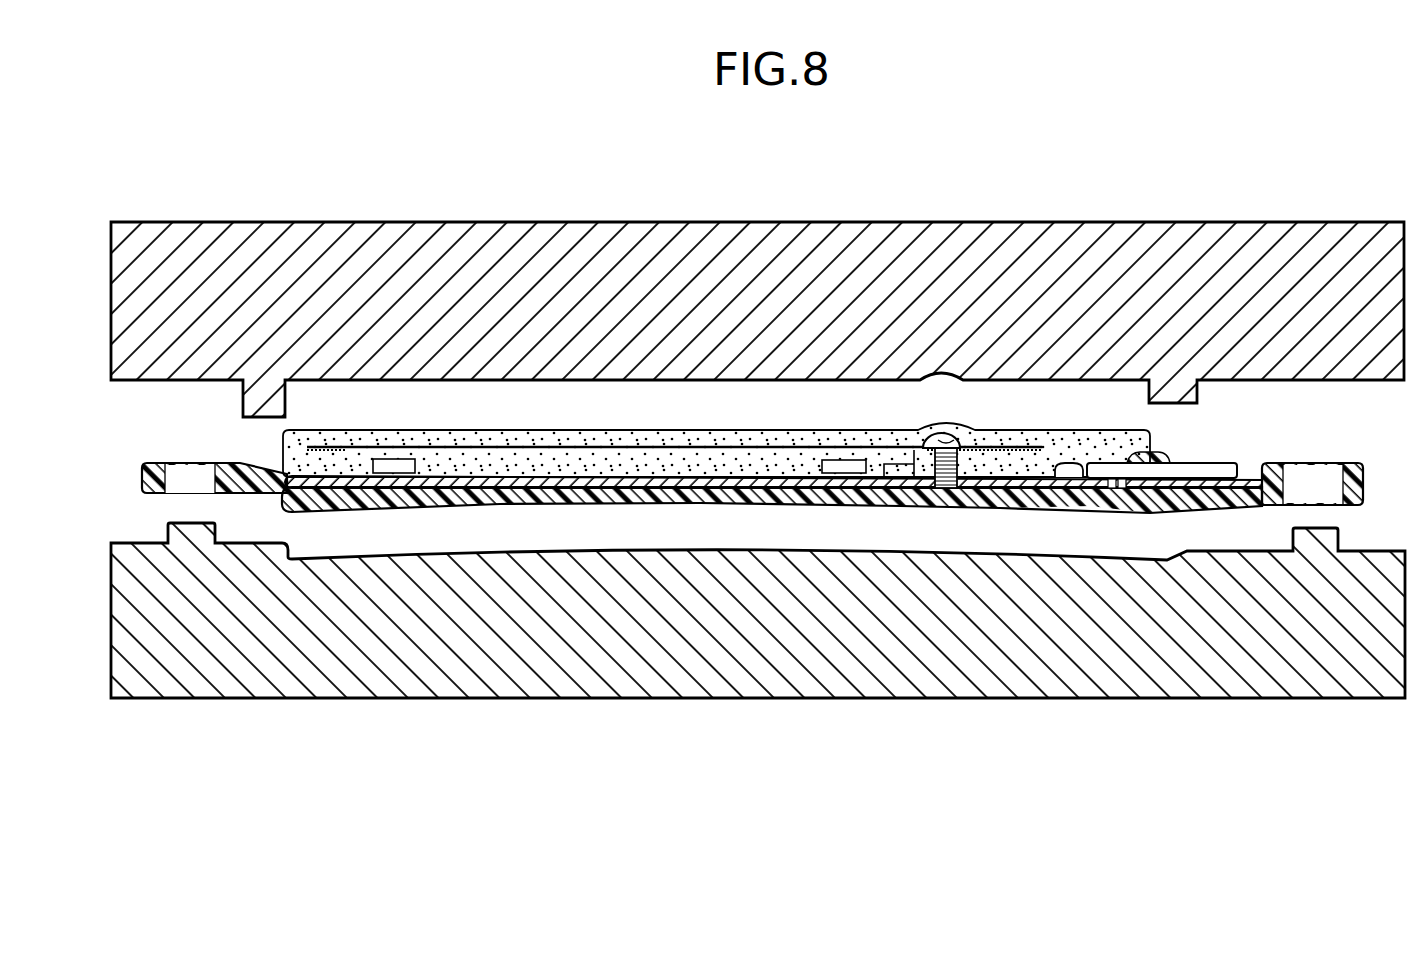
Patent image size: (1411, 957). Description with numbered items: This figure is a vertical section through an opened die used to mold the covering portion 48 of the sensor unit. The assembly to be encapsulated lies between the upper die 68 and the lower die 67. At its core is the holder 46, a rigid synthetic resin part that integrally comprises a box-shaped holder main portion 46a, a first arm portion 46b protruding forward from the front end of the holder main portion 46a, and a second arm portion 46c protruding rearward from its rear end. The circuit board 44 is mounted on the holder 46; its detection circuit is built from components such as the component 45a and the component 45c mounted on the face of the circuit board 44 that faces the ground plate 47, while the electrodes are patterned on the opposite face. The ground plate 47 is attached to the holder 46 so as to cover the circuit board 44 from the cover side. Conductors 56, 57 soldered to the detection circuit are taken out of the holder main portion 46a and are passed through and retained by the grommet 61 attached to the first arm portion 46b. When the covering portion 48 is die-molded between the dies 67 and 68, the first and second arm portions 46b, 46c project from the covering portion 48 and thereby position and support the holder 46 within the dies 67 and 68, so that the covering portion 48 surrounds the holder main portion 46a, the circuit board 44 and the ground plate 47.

The die 68 is at (763, 252).
The die 67 is at (1078, 680).
The holder 46 is at (758, 573).
The holder main portion 46a is at (772, 523).
The first arm portion 46b is at (1357, 463).
The second arm portion 46c is at (153, 463).
The covering portion 48 is at (732, 430).
The circuit board 44 is at (532, 480).
The component 45a is at (397, 457).
The component 45c is at (837, 467).
The ground plate 47 is at (1005, 446).
The conductor 56 is at (1201, 433).
The conductor 57 is at (1195, 465).
The grommet 61 is at (1160, 497).